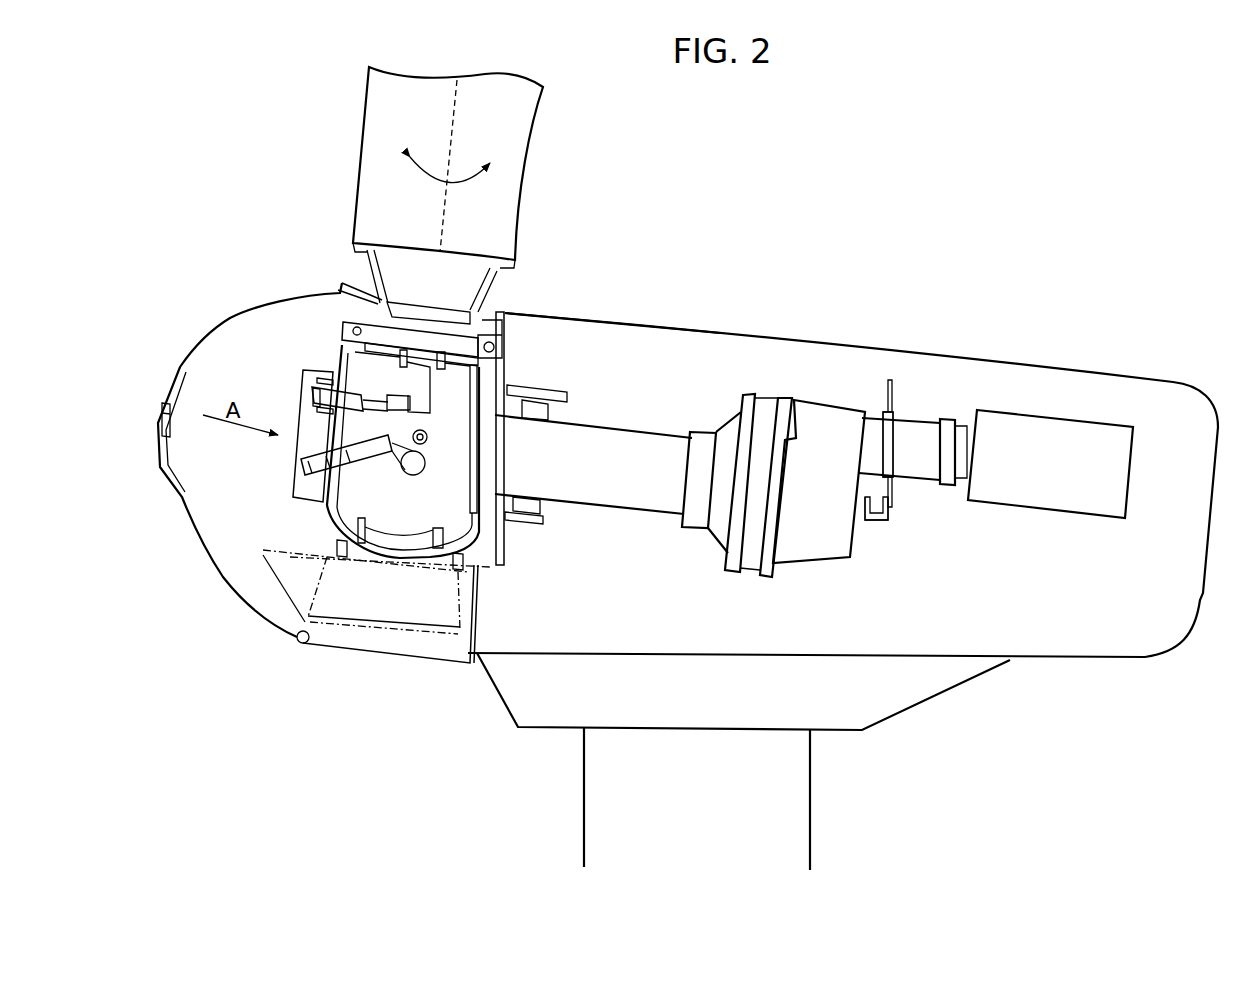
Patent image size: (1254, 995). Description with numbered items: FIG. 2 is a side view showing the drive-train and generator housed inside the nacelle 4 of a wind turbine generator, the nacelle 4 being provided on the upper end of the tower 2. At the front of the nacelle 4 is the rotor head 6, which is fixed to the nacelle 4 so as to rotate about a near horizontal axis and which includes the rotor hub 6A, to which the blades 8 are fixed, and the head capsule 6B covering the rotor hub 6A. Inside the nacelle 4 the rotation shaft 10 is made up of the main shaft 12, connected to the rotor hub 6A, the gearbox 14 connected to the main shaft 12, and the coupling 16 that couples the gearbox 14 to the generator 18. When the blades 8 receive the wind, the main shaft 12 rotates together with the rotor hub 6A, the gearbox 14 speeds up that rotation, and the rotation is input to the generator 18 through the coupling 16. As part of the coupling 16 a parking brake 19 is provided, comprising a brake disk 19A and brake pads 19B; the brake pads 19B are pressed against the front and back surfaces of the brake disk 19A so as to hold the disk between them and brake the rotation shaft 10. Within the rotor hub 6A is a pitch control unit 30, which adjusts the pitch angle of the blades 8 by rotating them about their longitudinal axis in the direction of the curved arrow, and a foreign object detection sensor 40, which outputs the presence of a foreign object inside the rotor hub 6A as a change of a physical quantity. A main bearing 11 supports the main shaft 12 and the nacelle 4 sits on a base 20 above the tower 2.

The tower 2 is at (811, 805).
The nacelle 4 is at (978, 353).
The rotor head 6 is at (152, 355).
The rotor hub 6A is at (327, 523).
The head capsule 6B is at (240, 605).
The blade 8 is at (382, 127).
The rotation shaft 10 is at (680, 343).
The main bearing 11 is at (549, 413).
The main shaft 12 is at (612, 427).
The gearbox 14 is at (808, 410).
The coupling 16 is at (920, 432).
The generator 18 is at (1088, 430).
The parking brake 19 is at (902, 500).
The brake disk 19A is at (885, 395).
The brake pads 19B is at (897, 515).
The nacelle base plate 20 is at (880, 707).
The pitch control unit 30 is at (433, 423).
The foreign object detection sensor 40 is at (407, 500).